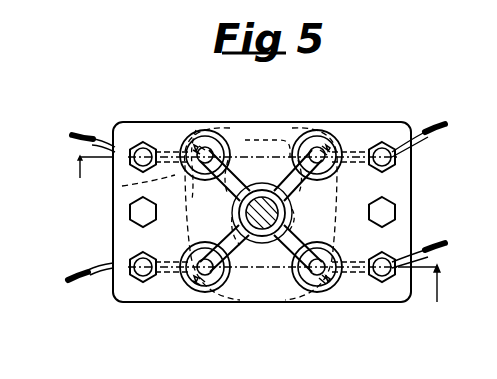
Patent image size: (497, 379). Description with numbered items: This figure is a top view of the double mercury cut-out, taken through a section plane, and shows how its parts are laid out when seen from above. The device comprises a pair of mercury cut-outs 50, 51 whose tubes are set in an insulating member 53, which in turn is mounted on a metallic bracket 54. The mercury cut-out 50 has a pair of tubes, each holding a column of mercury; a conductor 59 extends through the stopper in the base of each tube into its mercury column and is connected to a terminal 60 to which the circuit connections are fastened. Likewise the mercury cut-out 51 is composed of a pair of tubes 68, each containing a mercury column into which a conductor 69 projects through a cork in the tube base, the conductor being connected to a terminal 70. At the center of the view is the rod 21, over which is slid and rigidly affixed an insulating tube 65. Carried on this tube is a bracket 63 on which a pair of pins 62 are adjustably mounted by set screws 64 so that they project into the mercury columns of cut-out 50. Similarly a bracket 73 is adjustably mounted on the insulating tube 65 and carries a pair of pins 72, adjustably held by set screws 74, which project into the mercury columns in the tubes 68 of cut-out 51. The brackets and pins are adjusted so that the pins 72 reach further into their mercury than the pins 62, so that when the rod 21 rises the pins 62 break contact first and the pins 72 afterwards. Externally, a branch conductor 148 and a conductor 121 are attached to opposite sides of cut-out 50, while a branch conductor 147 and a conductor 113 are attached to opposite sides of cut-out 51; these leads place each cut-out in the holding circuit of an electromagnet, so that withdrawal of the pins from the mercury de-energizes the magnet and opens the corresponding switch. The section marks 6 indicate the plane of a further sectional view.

The insulating member 53 is at (405, 190).
The rod 21 is at (260, 215).
The insulating tube 65 is at (280, 213).
The bracket 63 is at (300, 242).
The tubes 68 is at (318, 185).
The mercury cut-out 50 is at (213, 130).
The pins 62 is at (208, 153).
The mercury cut-out 51 is at (308, 140).
The pins 72 is at (292, 172).
The bracket 73 is at (280, 160).
The metallic bracket 54 is at (197, 125).
The set screws 64 is at (195, 138).
The set screws 74 is at (352, 125).
The conductor 59 is at (130, 178).
The terminal 60 is at (143, 148).
The conductor 69 is at (385, 150).
The terminal 70 is at (410, 145).
The conductor 113 is at (80, 130).
The branch conductor 148 is at (445, 128).
The branch conductor 147 is at (445, 248).
The conductor 121 is at (80, 268).
The section line 6 is at (258, 224).